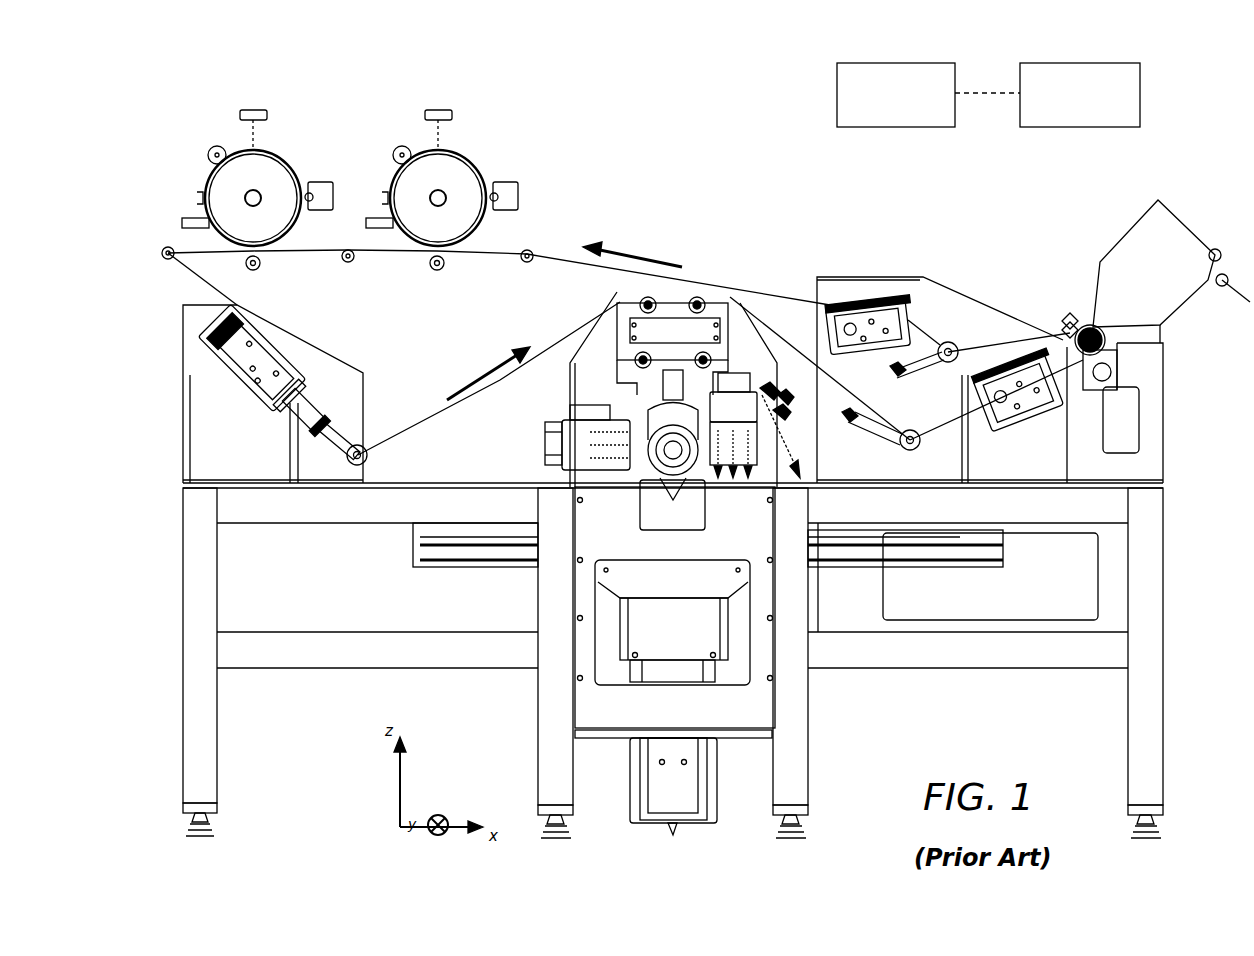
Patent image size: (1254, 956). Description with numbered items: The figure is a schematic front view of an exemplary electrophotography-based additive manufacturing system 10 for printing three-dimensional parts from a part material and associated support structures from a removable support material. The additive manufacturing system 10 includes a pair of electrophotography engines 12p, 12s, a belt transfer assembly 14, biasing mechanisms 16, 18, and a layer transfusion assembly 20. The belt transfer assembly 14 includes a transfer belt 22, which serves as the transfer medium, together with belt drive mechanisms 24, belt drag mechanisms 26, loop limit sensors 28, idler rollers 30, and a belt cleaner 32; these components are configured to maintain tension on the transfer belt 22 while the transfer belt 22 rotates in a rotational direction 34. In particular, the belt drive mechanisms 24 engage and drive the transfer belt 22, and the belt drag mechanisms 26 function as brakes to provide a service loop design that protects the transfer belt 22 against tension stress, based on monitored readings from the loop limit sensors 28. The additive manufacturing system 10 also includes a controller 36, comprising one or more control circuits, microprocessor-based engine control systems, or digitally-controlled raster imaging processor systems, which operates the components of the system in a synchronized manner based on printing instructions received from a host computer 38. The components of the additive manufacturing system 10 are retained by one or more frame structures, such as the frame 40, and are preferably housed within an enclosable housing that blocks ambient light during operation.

The additive manufacturing system 10 is at (196, 72).
The electrophotography engine 12p is at (284, 128).
The electrophotography engine 12s is at (490, 152).
The belt transfer assembly 14 is at (222, 408).
The biasing mechanism 16 is at (435, 270).
The biasing mechanism 18 is at (260, 268).
The layer transfusion assembly 20 is at (797, 182).
The transfer belt 22 is at (450, 425).
The belt drive mechanism 24 is at (262, 340).
The belt drag mechanism 26 is at (623, 307).
The loop limit sensor 28 is at (353, 465).
The idler roller 30 is at (165, 258).
The belt cleaner 32 is at (1137, 228).
The rotational direction 34 is at (627, 258).
The controller 36 is at (923, 127).
The host computer 38 is at (1117, 127).
The frame 40 is at (378, 657).